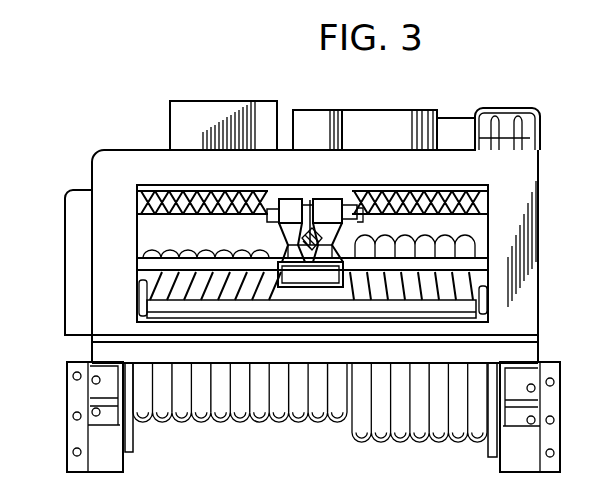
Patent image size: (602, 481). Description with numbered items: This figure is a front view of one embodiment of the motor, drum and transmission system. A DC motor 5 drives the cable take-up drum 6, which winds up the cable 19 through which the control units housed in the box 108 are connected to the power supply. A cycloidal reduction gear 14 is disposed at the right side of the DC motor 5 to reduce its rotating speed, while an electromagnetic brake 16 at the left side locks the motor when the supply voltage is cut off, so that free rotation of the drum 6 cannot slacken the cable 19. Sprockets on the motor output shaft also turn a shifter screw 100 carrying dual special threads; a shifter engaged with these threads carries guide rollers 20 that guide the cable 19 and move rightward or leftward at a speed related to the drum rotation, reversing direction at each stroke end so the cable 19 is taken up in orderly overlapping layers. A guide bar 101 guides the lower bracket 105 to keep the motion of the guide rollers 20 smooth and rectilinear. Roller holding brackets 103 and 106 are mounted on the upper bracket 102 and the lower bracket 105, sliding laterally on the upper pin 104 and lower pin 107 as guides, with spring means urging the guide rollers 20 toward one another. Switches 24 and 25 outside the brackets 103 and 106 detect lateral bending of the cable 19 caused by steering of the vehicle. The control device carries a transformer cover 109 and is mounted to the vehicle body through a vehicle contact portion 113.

The transformer cover 109 is at (220, 103).
The electromagnetic brake 16 is at (312, 112).
The DC motor 5 is at (389, 120).
The cycloidal reduction gear 14 is at (454, 120).
The box 108 is at (66, 236).
The shifter screw 100 is at (144, 220).
The switch 25 is at (433, 200).
The guide bar 101 is at (178, 262).
The guide rollers 20 is at (268, 214).
The roller holding bracket 103 is at (296, 205).
The upper pin 104 is at (310, 210).
The upper bracket 102 is at (338, 210).
The roller holding bracket 106 is at (362, 216).
The switch 24 is at (289, 243).
The lower bracket 105 is at (343, 262).
The lower pin 107 is at (312, 278).
The cable 19 is at (289, 252).
The vehicle contact portion 113 is at (72, 395).
The cable take-up drum 6 is at (135, 447).